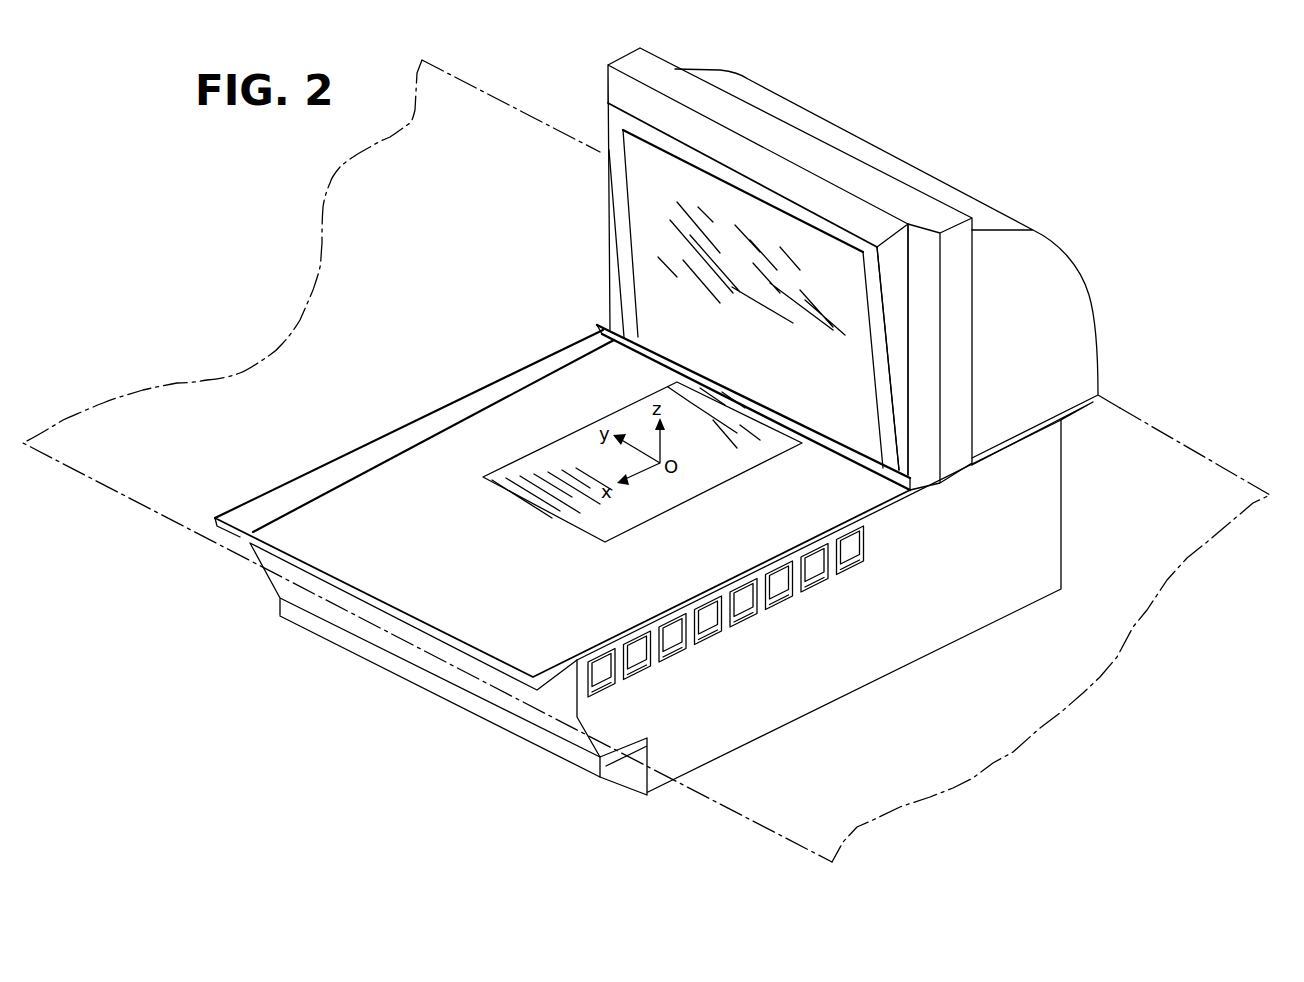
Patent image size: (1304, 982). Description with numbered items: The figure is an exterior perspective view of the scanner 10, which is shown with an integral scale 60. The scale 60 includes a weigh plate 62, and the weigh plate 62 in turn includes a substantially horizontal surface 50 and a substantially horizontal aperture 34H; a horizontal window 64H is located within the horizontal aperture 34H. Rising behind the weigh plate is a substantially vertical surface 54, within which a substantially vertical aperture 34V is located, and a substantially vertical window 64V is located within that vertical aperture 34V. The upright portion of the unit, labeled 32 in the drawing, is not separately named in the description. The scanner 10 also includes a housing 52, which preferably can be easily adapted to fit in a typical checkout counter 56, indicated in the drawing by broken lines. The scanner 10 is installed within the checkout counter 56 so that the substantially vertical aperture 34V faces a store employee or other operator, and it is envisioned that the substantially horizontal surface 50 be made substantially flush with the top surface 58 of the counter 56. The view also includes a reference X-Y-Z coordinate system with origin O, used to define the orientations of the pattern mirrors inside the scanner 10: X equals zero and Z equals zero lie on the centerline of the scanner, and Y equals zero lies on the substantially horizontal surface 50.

The scanner 10 is at (868, 132).
The housing 32 is at (1099, 307).
The substantially vertical aperture 34V is at (871, 316).
The substantially vertical surface 54 is at (877, 348).
The substantially vertical window 64V is at (722, 200).
The substantially horizontal surface 50 is at (824, 489).
The integral scale 60 is at (390, 583).
The weigh plate 62 is at (503, 640).
The housing 52 is at (909, 652).
The substantially horizontal aperture 34H is at (547, 510).
The horizontal window 64H is at (545, 453).
The checkout counter 56 is at (1194, 443).
The top surface 58 is at (1112, 634).